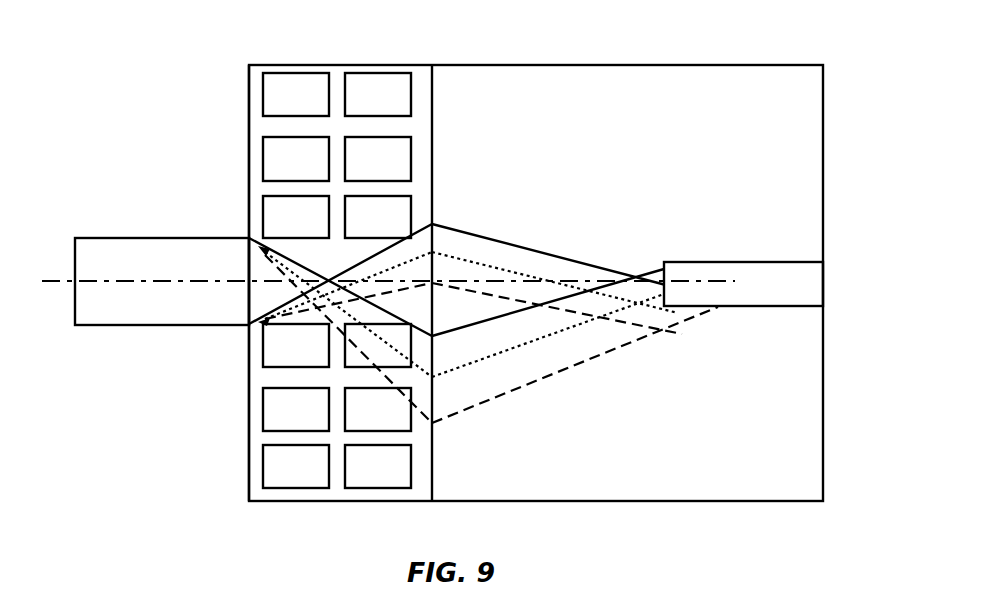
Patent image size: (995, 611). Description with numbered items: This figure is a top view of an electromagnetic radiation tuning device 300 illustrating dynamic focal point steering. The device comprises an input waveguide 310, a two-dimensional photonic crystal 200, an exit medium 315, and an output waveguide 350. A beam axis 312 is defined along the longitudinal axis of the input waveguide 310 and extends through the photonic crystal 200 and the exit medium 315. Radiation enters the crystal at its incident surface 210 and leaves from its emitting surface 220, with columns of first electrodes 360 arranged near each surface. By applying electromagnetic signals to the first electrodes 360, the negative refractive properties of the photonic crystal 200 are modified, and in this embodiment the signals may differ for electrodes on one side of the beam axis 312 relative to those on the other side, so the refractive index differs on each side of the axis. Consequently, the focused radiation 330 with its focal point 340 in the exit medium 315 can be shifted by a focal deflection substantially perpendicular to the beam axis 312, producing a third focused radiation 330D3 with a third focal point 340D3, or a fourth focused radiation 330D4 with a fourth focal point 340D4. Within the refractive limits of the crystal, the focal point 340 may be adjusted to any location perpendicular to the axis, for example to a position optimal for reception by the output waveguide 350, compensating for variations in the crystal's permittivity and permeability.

The electromagnetic radiation tuning device 300 is at (126, 97).
The exit medium 315 is at (542, 65).
The 2D photonic crystal 200 is at (350, 65).
The incident surface 210 is at (248, 438).
The emitting surface 220 is at (433, 423).
The first electrodes 360 is at (377, 488).
The input waveguide 310 is at (167, 325).
The beam axis 312 is at (63, 281).
The output waveguide 350 is at (823, 282).
The focused radiation 330 is at (460, 231).
The third focused radiation 330D3 is at (480, 262).
The fourth focused radiation 330D4 is at (513, 300).
The focal point 340 is at (638, 277).
The third focal point 340D3 is at (638, 303).
The fourth focal point 340D4 is at (658, 332).